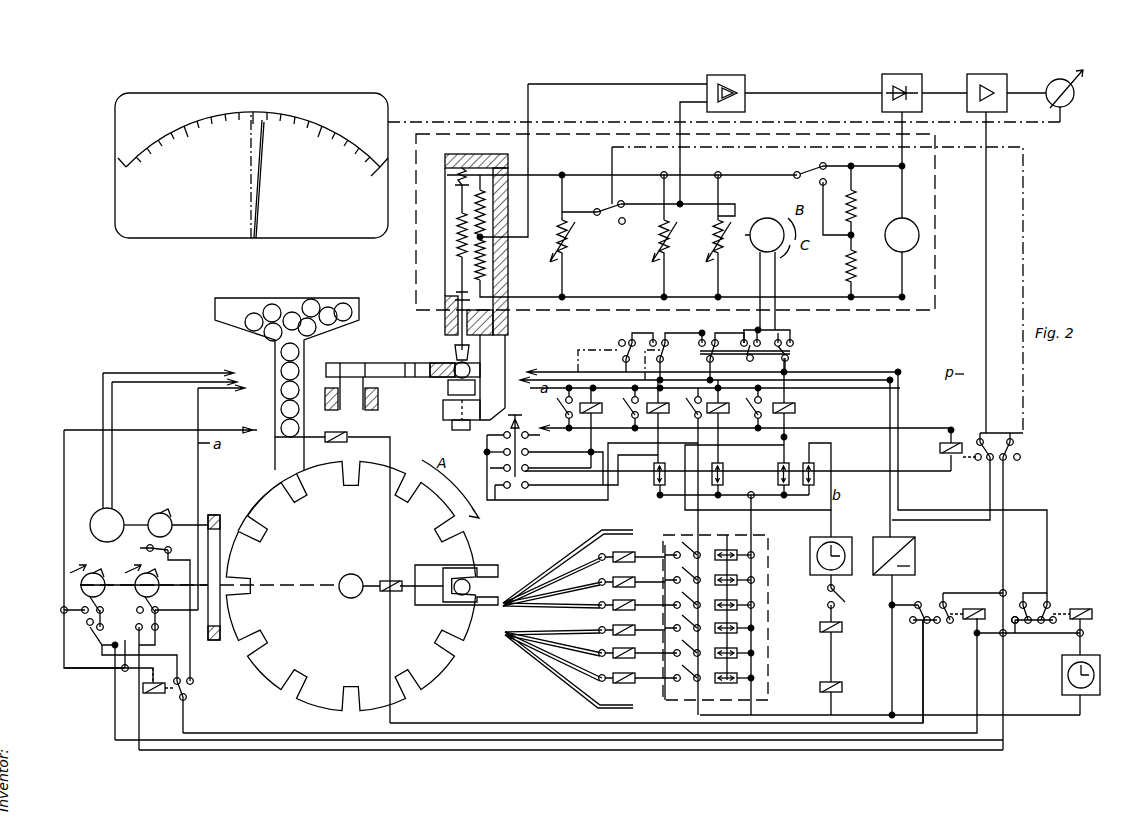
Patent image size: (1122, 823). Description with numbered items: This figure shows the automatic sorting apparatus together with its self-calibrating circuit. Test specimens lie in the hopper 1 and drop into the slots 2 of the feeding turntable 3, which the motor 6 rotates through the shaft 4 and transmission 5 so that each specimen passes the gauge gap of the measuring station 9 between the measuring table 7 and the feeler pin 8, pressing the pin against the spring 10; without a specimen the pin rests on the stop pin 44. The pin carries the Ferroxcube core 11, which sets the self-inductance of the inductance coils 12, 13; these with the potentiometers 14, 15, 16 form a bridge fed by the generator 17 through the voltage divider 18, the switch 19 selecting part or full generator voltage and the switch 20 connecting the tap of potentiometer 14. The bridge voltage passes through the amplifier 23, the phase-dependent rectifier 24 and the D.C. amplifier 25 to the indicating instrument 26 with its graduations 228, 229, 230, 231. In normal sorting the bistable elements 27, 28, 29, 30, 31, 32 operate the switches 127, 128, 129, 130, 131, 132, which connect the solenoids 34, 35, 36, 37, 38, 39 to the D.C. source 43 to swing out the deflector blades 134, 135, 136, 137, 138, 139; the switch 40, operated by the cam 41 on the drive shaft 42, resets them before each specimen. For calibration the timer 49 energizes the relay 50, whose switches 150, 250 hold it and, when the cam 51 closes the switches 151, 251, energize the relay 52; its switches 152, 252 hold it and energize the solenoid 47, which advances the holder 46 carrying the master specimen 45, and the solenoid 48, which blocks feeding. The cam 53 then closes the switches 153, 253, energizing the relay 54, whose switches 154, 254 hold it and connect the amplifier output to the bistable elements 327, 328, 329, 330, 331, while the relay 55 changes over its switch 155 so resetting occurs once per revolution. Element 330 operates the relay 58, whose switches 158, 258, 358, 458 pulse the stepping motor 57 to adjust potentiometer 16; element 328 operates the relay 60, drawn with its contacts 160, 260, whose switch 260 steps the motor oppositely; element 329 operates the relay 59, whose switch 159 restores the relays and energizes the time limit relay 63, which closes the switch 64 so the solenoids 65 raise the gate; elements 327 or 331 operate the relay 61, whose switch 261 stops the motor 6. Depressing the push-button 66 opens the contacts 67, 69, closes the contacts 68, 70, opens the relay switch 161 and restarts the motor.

The hopper 1 is at (345, 306).
The slots 2 is at (352, 470).
The feeding turntable 3 is at (268, 492).
The shaft 4 is at (285, 585).
The transmission 5 is at (214, 640).
The motor 6 is at (117, 514).
The measuring table 7 is at (448, 391).
The feeler pin 8 is at (455, 351).
The measuring station 9 is at (505, 337).
The spring 10 is at (458, 180).
The Ferroxcube core 11 is at (458, 240).
The inductance coil 12 is at (487, 205).
The inductance coil 13 is at (487, 258).
The potentiometer 14 is at (568, 236).
The potentiometer 15 is at (670, 236).
The potentiometer 16 is at (724, 236).
The generator 17 is at (905, 222).
The voltage divider 18 is at (860, 231).
The switch 19 is at (848, 193).
The switch 20 is at (648, 207).
The amplifier 23 is at (737, 93).
The phase-dependent rectifier 24 is at (912, 93).
The D.C. amplifier 25 is at (997, 90).
The indicating instrument 26 is at (115, 100).
The bistable element 27 is at (740, 675).
The bistable element 28 is at (740, 650).
The bistable element 29 is at (740, 625).
The bistable element 30 is at (740, 602).
The bistable element 31 is at (740, 577).
The bistable element 32 is at (740, 552).
The solenoid 34 is at (635, 671).
The solenoid 35 is at (635, 646).
The solenoid 36 is at (635, 623).
The solenoid 37 is at (635, 598).
The solenoid 38 is at (635, 575).
The solenoid 39 is at (635, 550).
The switch 40 is at (174, 567).
The cam 41 is at (160, 516).
The drive shaft 42 is at (180, 520).
The D.C. source 43 is at (915, 548).
The stop pin 44 is at (455, 300).
The master specimen 45 is at (468, 580).
The holder 46 is at (495, 570).
The solenoid 47 is at (395, 581).
The solenoid 48 is at (348, 434).
The timer 49 is at (1062, 680).
The relay 50 is at (1071, 622).
The cam 51 is at (151, 581).
The relay 52 is at (1010, 613).
The cam 53 is at (92, 575).
The relay 54 is at (941, 449).
The relay 55 is at (159, 690).
The stepping motor 57 is at (770, 263).
The relay 58 is at (758, 434).
The relay 59 is at (723, 421).
The relay 60 is at (664, 421).
The relay 61 is at (598, 427).
The time limit relay 63 is at (815, 578).
The switch 64 is at (847, 603).
The solenoids 65 is at (841, 667).
The push-button 66 is at (516, 437).
The contacts 67 is at (514, 435).
The contacts 68 is at (589, 467).
The contacts 69 is at (535, 467).
The contacts 70 is at (569, 477).
The switch 127 is at (682, 669).
The switch 128 is at (682, 644).
The switch 129 is at (682, 619).
The switch 130 is at (682, 596).
The switch 131 is at (682, 571).
The switch 132 is at (682, 546).
The deflector blade 134 is at (555, 670).
The deflector blade 135 is at (545, 656).
The deflector blade 136 is at (540, 640).
The deflector blade 137 is at (596, 600).
The deflector blade 138 is at (580, 584).
The deflector blade 139 is at (560, 572).
The switch 150 is at (1034, 621).
The cam-operated switch 151 is at (167, 612).
The relay switch 152 is at (948, 634).
The cam-operated switch 153 is at (93, 612).
The relay switch 154 is at (1019, 594).
The relay switch 155 is at (194, 671).
The relay switch 158 is at (747, 408).
The switch 159 is at (695, 397).
The relay contact 160 is at (621, 408).
The relay switch 161 is at (559, 408).
The graduation 228 is at (194, 110).
The graduation 229 is at (234, 104).
The graduation 230 is at (265, 100).
The graduation 231 is at (304, 110).
The switch 250 is at (1021, 640).
The cam-operated switch 251 is at (160, 685).
The switch 252 is at (913, 662).
The cam-operated switch 253 is at (91, 679).
The relay switch 254 is at (986, 454).
The relay switch 258 is at (695, 348).
The switch 260 is at (664, 340).
The switch 261 is at (620, 342).
The bistable element 327 is at (658, 445).
The bistable element 328 is at (656, 488).
The bistable element 329 is at (731, 473).
The bistable element 330 is at (772, 473).
The bistable element 331 is at (816, 466).
The relay switch 358 is at (790, 357).
The relay switch 458 is at (792, 343).